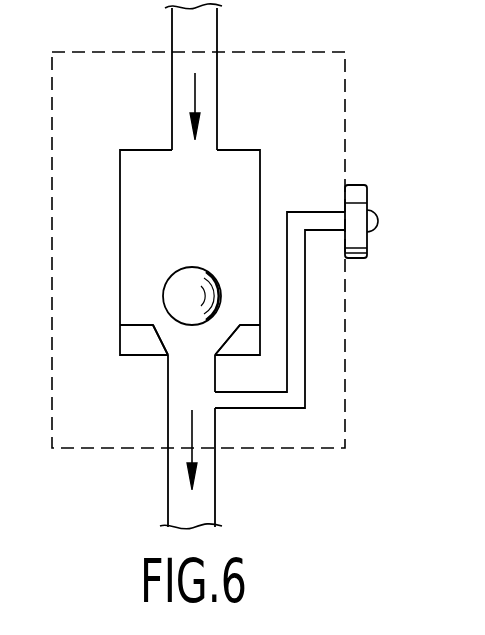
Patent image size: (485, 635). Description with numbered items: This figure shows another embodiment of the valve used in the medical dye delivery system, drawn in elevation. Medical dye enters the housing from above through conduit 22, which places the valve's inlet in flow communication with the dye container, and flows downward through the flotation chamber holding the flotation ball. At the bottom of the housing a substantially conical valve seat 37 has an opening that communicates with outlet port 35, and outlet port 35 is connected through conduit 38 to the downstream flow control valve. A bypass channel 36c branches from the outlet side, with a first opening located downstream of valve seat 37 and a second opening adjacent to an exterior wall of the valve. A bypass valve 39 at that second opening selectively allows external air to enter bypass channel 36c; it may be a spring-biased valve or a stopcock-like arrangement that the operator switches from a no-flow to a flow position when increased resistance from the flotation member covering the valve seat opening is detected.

The conduit 22 is at (217, 96).
The outlet port 35 is at (153, 356).
The valve seat 37 is at (152, 327).
The conduit 38 is at (215, 463).
The bypass channel 36c is at (305, 345).
The bypass valve 39 is at (368, 237).